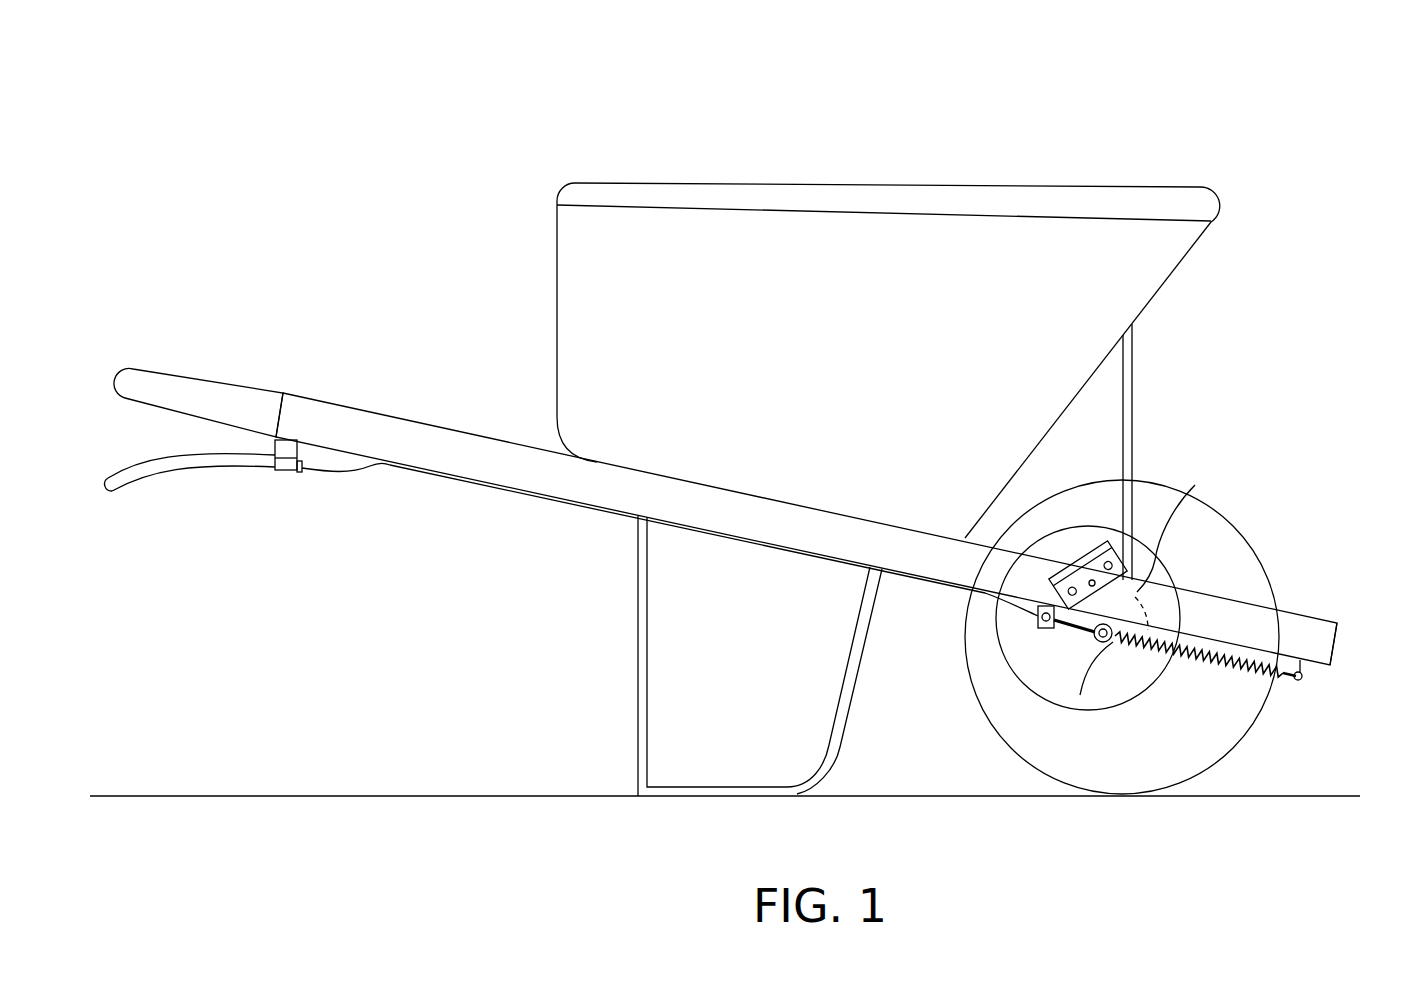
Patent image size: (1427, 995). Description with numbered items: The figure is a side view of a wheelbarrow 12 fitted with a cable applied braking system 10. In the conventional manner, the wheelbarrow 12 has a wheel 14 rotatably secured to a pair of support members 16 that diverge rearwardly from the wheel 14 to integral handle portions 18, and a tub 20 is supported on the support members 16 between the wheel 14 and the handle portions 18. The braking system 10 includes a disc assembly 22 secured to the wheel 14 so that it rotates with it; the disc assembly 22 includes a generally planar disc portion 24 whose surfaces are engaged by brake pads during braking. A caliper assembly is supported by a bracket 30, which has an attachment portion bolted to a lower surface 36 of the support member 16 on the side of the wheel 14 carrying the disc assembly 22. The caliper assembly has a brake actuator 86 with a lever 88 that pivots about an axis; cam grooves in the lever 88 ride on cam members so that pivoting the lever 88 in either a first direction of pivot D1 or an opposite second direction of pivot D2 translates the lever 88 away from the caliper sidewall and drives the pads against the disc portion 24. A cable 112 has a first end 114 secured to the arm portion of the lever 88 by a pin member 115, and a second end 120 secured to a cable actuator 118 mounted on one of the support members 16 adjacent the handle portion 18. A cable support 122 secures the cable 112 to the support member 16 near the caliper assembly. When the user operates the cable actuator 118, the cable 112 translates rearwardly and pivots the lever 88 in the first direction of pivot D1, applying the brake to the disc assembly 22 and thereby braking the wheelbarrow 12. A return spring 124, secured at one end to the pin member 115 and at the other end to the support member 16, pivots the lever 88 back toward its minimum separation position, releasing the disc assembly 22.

The braking system 10 is at (1096, 516).
The wheelbarrow 12 is at (1151, 182).
The wheel 14 is at (1148, 500).
The support members 16 is at (513, 456).
The handle portions 18 is at (147, 385).
The tub 20 is at (575, 193).
The disc assembly 22 is at (1147, 714).
The disc portion 24 is at (1103, 690).
The bracket 30 is at (1050, 566).
The lower surface 36 is at (1319, 667).
The brake actuator 86 is at (1113, 650).
The lever 88 is at (1176, 524).
The cable 112 is at (840, 565).
The first end 114 is at (1036, 624).
The pin member 115 is at (1073, 682).
The cable actuator 118 is at (285, 472).
The second end 120 is at (365, 472).
The cable support 122 is at (1036, 614).
The return spring 124 is at (1245, 668).
The first direction of pivot D1 is at (1083, 632).
The second direction of pivot D2 is at (1137, 618).